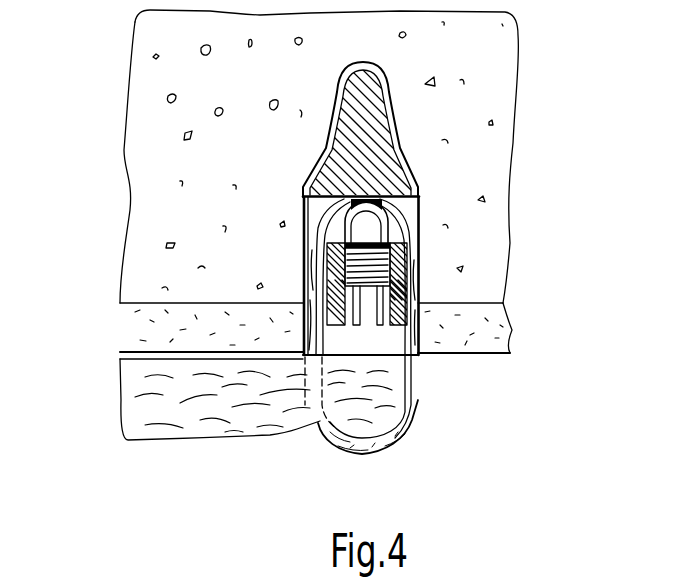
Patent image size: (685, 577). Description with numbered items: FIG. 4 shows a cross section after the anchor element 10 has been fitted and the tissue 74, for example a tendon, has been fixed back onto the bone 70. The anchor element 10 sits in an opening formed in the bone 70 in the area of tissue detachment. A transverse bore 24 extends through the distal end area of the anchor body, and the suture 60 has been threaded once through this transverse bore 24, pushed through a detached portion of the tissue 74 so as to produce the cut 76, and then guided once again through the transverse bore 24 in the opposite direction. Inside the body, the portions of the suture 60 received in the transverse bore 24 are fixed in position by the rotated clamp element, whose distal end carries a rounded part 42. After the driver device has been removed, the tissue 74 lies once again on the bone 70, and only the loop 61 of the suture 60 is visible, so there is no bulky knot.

The anchor element 10 is at (338, 273).
The transverse bore 24 is at (363, 183).
The rounded part 42 is at (372, 227).
The suture 60 is at (413, 410).
The loop 61 is at (377, 447).
The bone 70 is at (488, 165).
The tissue 74 is at (208, 415).
The cut 76 is at (312, 402).